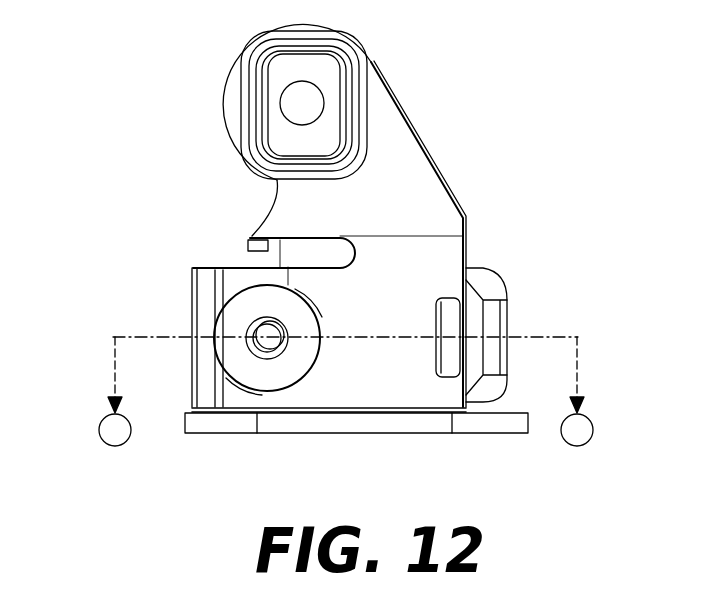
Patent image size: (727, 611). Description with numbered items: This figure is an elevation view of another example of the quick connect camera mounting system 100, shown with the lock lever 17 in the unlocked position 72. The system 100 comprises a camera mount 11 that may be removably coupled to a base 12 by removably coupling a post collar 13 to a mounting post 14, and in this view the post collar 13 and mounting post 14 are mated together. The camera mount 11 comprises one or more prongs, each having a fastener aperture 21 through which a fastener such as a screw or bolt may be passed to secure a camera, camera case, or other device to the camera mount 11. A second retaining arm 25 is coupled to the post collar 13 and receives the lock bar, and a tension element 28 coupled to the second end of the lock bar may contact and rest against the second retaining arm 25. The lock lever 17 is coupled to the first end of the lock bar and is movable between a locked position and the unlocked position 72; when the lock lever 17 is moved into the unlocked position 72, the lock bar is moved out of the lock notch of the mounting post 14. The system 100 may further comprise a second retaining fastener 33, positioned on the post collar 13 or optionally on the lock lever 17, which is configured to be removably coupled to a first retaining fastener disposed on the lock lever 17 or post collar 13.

The quick connect camera mounting system 100 is at (84, 64).
The camera mount 11 is at (380, 148).
The fastener aperture 21 is at (300, 103).
The mounting post 14 is at (250, 232).
The second retaining arm 25 is at (206, 283).
The tension element 28 is at (263, 368).
The second retaining fastener 33 is at (440, 318).
The lock lever 17 is at (485, 318).
The base 12 is at (410, 422).
The post collar 13 is at (430, 268).
The unlocked position 72 is at (528, 254).